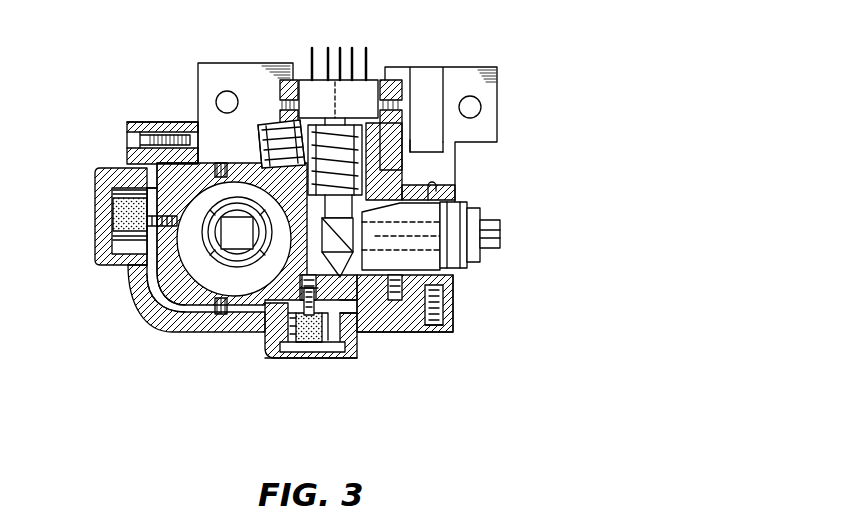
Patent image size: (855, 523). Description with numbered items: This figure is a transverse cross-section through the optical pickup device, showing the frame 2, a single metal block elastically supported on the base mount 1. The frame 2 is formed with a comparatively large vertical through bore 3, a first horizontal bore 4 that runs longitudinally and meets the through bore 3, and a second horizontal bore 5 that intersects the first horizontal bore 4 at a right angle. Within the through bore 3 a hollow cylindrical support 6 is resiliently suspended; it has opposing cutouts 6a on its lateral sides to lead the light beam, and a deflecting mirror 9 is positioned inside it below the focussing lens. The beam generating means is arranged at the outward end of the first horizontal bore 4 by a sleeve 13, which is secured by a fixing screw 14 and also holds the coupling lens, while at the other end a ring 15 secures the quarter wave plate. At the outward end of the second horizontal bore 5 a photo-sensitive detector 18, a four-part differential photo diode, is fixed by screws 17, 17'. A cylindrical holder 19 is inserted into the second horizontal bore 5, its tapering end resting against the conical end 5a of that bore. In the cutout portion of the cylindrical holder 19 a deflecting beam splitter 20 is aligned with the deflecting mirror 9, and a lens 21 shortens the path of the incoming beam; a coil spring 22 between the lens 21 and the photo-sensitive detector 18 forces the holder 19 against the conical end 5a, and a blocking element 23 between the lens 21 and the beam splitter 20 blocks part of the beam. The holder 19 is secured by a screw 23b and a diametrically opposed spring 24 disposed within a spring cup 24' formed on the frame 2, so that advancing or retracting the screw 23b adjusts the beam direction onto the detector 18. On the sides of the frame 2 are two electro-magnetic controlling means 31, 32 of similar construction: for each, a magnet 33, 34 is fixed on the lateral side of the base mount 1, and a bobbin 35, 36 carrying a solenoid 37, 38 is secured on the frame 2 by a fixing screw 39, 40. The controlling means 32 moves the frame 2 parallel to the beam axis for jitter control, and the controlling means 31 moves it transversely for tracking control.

The base mount 1 is at (158, 314).
The frame 2 is at (178, 314).
The through bore 3 is at (200, 306).
The first horizontal bore 4 is at (484, 228).
The second horizontal bore 5 is at (270, 322).
The conical end 5a is at (378, 303).
The cylindrical support 6 is at (238, 245).
The cutouts 6a is at (262, 262).
The deflecting mirror 9 is at (218, 262).
The sleeve 13 is at (455, 275).
The fixing screw 14 is at (395, 300).
The ring 15 is at (300, 320).
The screw 17 is at (438, 115).
The screw 17' is at (248, 84).
The photo-sensitive detector 18 is at (318, 95).
The cylindrical holder 19 is at (345, 174).
The deflecting beam splitter 20 is at (440, 300).
The lens 21 is at (437, 191).
The coil spring 22 is at (346, 130).
The blocking element 23 is at (448, 240).
The screw 23b is at (448, 140).
The spring 24 is at (228, 125).
The spring cup 24' is at (251, 144).
The electro-magnetic controlling means 31 is at (348, 369).
The electro-magnetic controlling means 32 is at (90, 274).
The magnet 33 is at (308, 332).
The magnet 34 is at (100, 272).
The bobbin 35 is at (346, 347).
The bobbin 36 is at (130, 234).
The solenoid 37 is at (338, 334).
The solenoid 38 is at (120, 172).
The fixing screw 39 is at (318, 347).
The fixing screw 40 is at (114, 214).